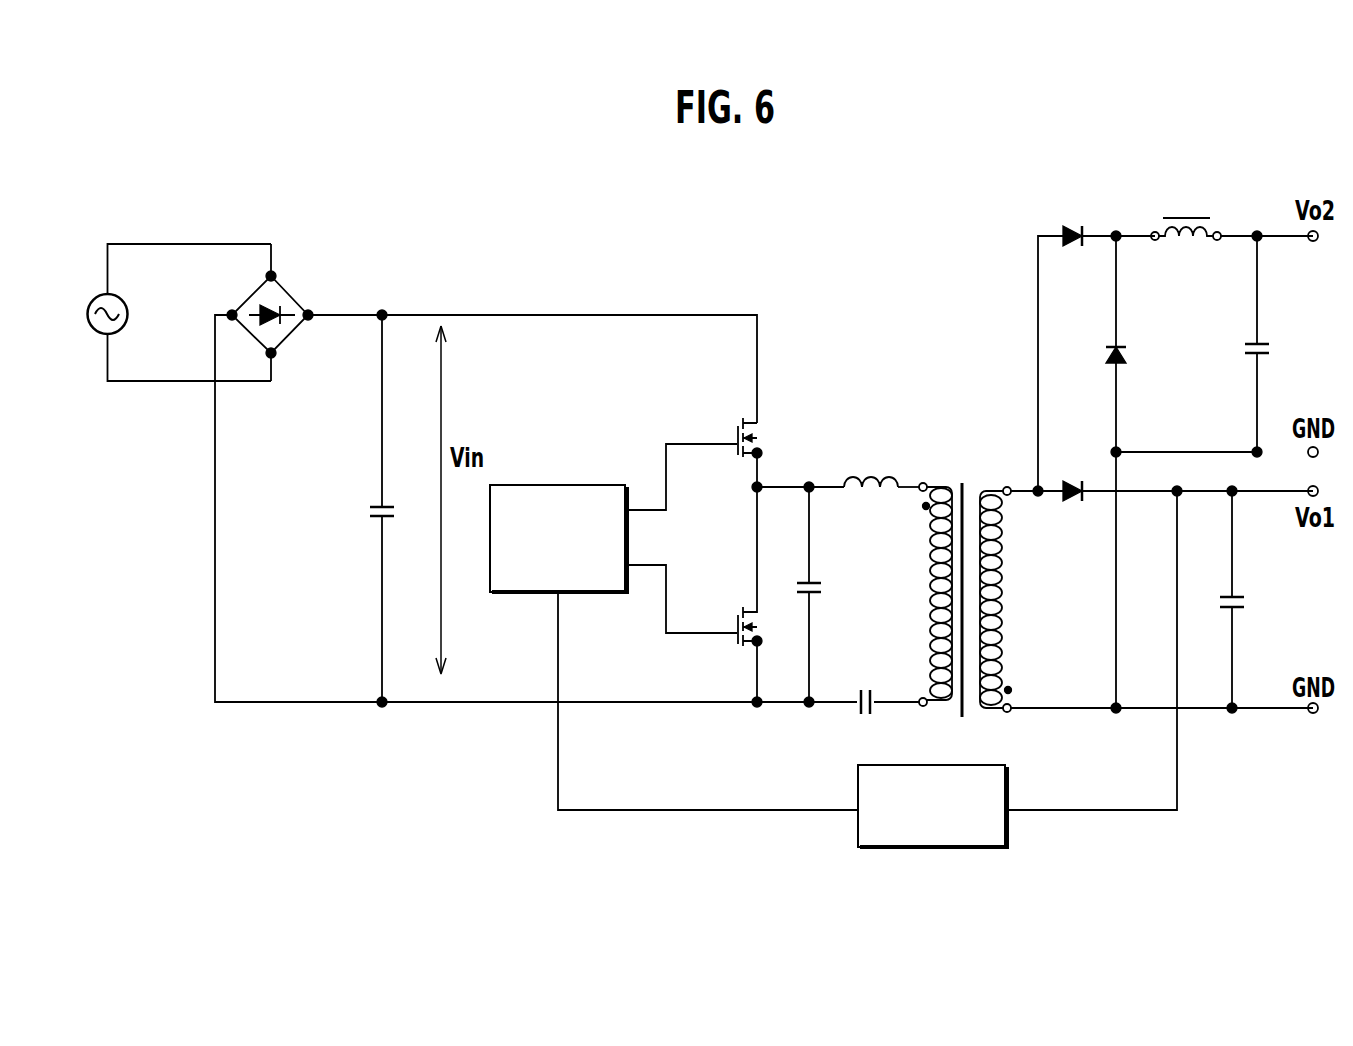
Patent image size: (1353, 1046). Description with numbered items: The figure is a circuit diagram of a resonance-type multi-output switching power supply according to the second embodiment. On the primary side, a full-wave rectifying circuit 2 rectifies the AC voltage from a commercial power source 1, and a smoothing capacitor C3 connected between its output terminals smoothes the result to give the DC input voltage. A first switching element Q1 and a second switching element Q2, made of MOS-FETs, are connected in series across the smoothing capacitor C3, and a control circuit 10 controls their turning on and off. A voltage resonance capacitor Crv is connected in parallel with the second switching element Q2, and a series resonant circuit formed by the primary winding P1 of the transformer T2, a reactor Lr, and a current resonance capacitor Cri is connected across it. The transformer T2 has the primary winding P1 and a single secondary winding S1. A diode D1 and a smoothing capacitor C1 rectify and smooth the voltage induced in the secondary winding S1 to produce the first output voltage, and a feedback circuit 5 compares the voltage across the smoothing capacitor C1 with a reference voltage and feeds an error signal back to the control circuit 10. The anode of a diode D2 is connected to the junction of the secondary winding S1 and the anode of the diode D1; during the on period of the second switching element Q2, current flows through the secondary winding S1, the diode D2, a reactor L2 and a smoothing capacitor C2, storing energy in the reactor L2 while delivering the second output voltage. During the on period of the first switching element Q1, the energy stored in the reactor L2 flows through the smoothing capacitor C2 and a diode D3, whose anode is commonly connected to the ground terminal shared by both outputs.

The commercial power source 1 is at (84, 314).
The full-wave rectifying circuit 2 is at (292, 293).
The control circuit 10 is at (552, 485).
The feedback circuit 5 is at (1007, 825).
The smoothing capacitor C3 is at (400, 515).
The first switching element Q1 is at (765, 452).
The second switching element Q2 is at (765, 594).
The voltage resonance capacitor Crv is at (830, 590).
The reactor Lr is at (885, 464).
The current resonance capacitor Cri is at (842, 721).
The transformer T2 is at (965, 582).
The primary winding P1 is at (915, 593).
The secondary winding S1 is at (1016, 599).
The diode D1 is at (1071, 507).
The diode D2 is at (1072, 220).
The diode D3 is at (1134, 353).
The reactor L2 is at (1186, 251).
The smoothing capacitor C1 is at (1251, 605).
The smoothing capacitor C2 is at (1275, 352).